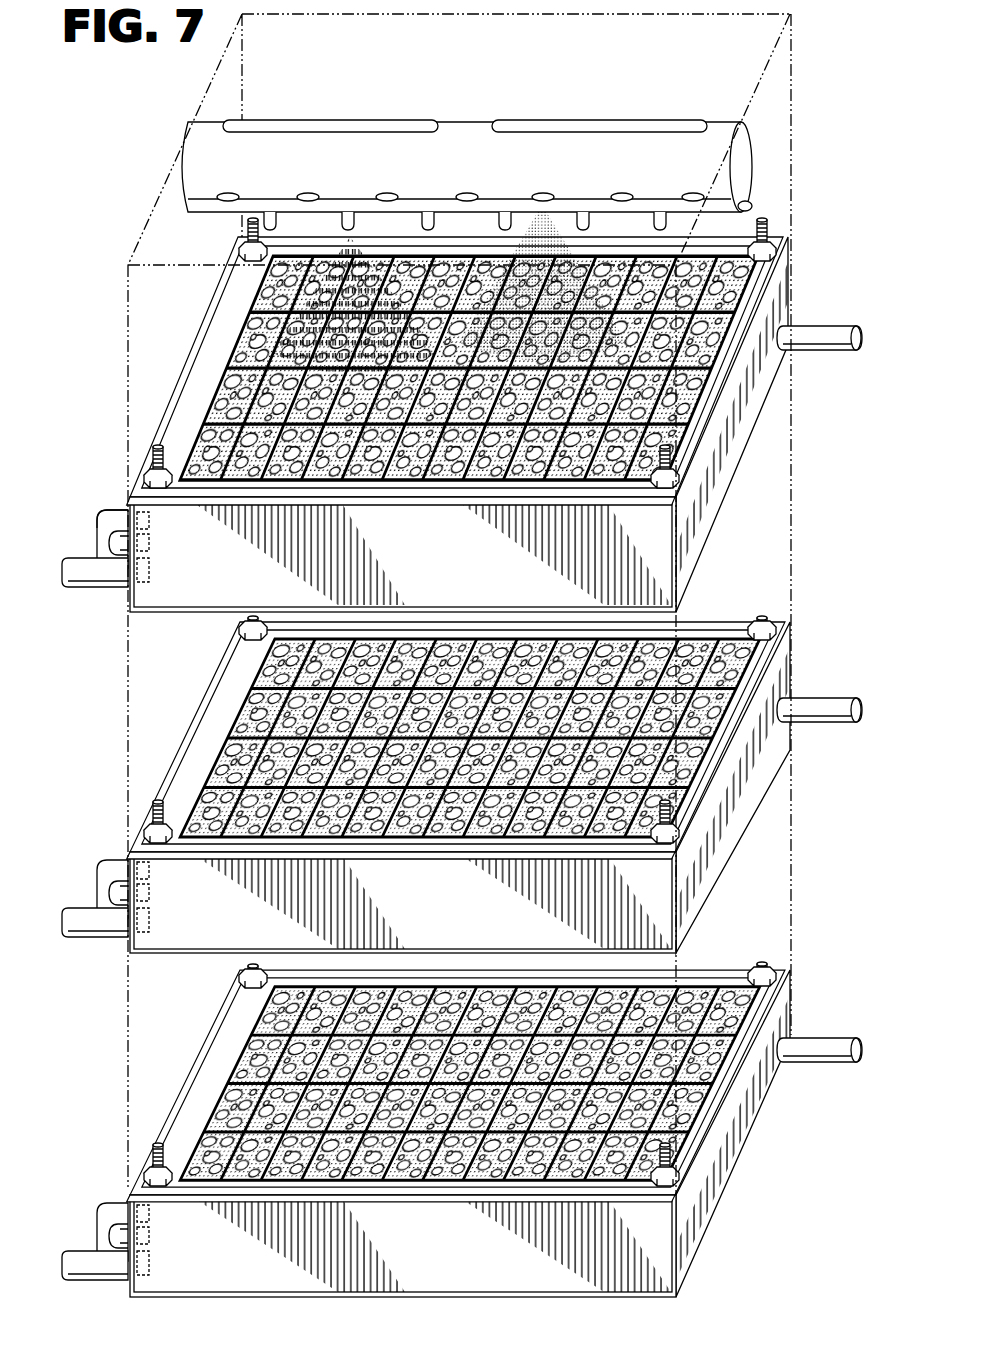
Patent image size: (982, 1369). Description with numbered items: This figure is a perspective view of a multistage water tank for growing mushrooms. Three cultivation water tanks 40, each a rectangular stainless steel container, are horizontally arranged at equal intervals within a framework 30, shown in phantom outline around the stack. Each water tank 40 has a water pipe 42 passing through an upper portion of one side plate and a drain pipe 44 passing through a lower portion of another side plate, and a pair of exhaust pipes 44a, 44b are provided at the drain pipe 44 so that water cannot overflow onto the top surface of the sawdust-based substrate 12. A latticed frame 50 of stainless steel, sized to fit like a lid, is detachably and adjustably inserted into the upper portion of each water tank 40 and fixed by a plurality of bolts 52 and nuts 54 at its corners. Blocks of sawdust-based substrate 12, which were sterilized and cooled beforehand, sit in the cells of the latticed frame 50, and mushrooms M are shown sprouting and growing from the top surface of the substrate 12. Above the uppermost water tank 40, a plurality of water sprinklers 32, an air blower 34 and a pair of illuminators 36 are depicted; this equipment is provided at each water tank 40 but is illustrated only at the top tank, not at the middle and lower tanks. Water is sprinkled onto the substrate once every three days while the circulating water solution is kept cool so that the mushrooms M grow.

The framework 30 is at (706, 52).
The water sprinklers 32 is at (352, 216).
The air blower 34 is at (748, 165).
The illuminators 36 is at (305, 120).
The sawdust-based substrate 12 is at (217, 357).
The mushrooms M is at (243, 318).
The latticed frame 50 is at (711, 294).
The cultivation water tank 40 is at (756, 470).
The water pipe 42 is at (817, 350).
The drain pipe 44 is at (83, 592).
The exhaust pipe 44a is at (118, 513).
The exhaust pipe 44b is at (118, 540).
The bolts 52 is at (157, 443).
The nuts 54 is at (793, 637).